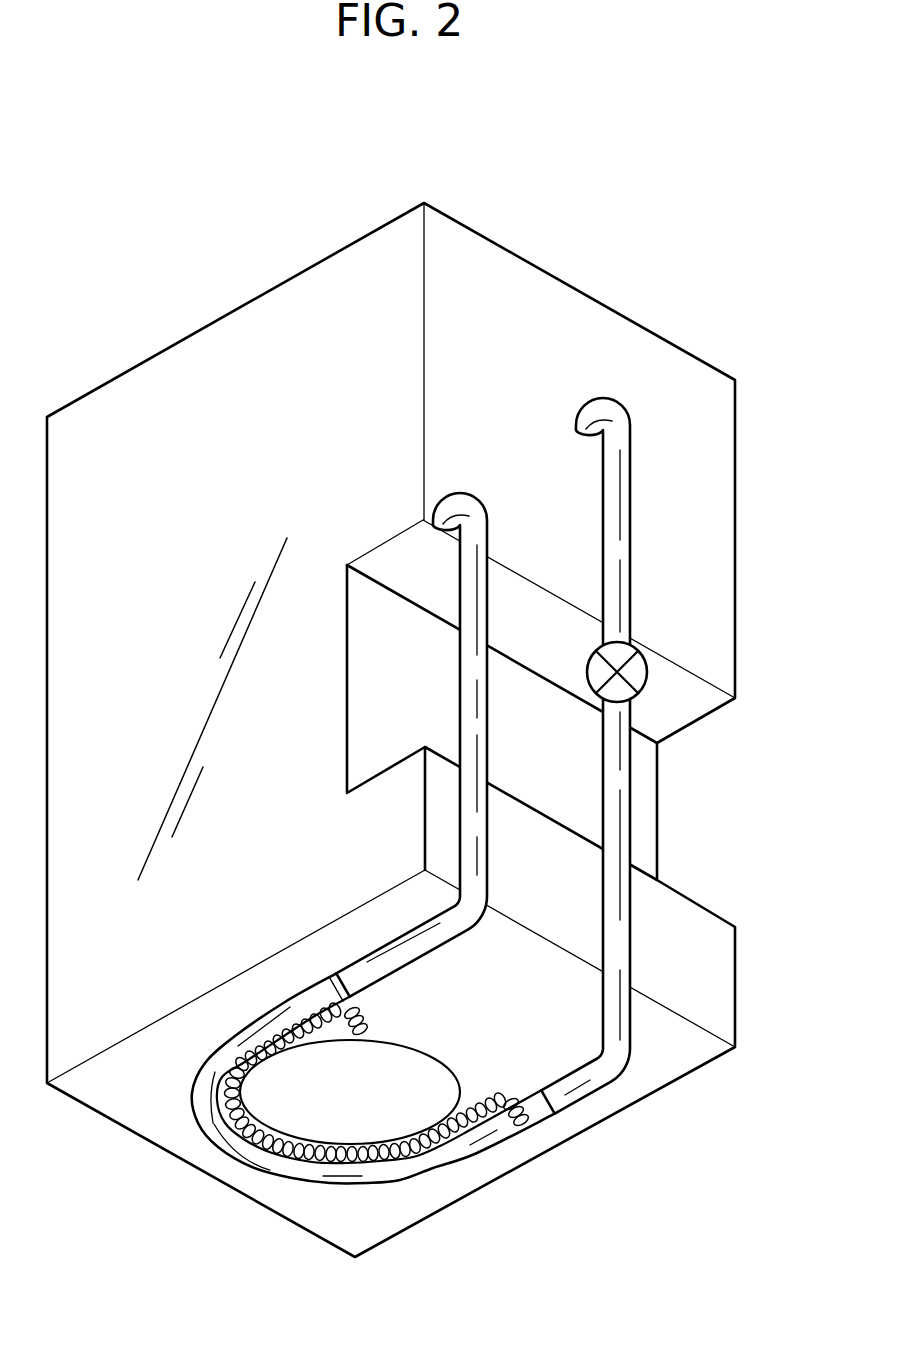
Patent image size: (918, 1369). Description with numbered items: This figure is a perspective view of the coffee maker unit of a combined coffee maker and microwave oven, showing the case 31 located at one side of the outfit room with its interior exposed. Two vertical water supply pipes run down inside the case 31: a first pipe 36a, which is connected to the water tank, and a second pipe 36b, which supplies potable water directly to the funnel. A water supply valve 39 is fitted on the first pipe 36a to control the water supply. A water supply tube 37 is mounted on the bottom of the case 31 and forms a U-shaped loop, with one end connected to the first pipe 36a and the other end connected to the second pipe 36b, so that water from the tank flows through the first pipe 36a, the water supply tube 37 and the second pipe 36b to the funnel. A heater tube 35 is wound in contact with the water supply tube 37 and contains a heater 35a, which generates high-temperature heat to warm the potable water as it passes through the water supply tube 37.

The case 31 is at (260, 343).
The heater tube 35 is at (480, 1128).
The heater 35a is at (363, 1026).
The first pipe 36a is at (626, 414).
The second pipe 36b is at (473, 498).
The water supply tube 37 is at (277, 1158).
The water supply valve 39 is at (597, 657).